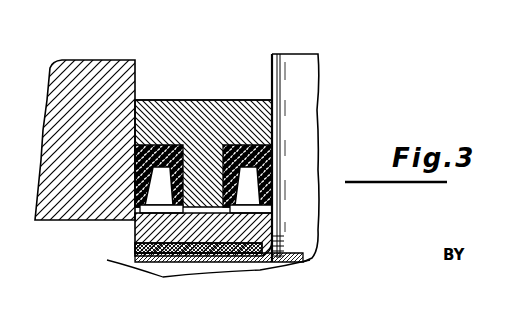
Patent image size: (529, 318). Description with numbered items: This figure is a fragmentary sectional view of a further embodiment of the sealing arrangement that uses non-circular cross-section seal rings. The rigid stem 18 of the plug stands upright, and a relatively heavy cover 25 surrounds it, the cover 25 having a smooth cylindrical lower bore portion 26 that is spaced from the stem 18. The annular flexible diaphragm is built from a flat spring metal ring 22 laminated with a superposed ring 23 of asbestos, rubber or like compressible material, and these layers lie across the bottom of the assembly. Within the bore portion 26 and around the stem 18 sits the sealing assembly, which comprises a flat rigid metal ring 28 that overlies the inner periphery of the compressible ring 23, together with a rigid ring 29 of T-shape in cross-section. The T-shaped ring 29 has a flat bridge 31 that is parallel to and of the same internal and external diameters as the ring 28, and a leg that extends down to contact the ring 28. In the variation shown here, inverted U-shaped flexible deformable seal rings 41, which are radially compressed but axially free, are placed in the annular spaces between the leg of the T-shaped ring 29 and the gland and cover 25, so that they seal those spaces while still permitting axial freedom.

The rigid stem 18 is at (318, 112).
The flat spring metal ring 22 is at (235, 255).
The ring of compressible material 23 is at (193, 252).
The cover 25 is at (115, 73).
The smooth cylindrical lower bore portion 26 is at (136, 62).
The flat rigid metal ring 28 is at (277, 223).
The rigid ring of T-shape 29 is at (221, 91).
The flat bridge 31 is at (163, 100).
The inverted U-shaped flexible deformable seal rings 41 is at (167, 146).